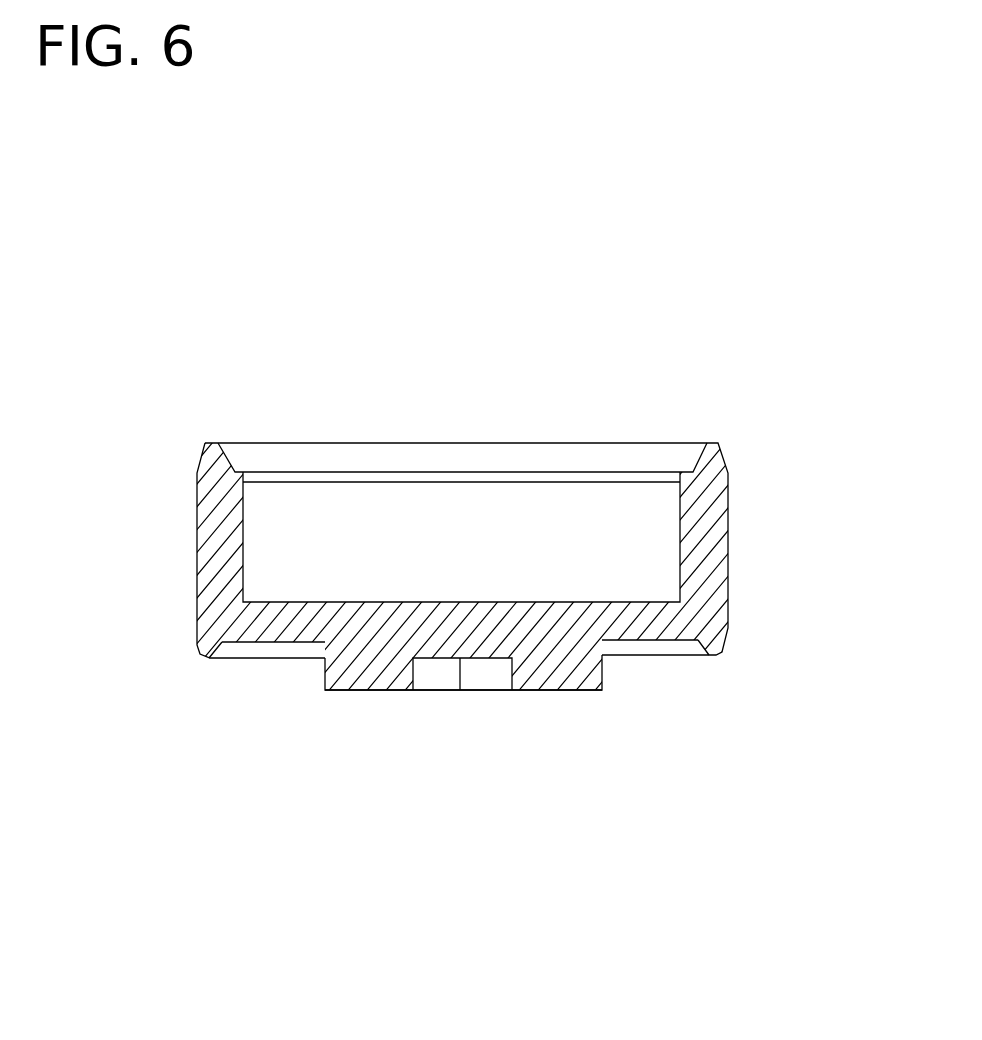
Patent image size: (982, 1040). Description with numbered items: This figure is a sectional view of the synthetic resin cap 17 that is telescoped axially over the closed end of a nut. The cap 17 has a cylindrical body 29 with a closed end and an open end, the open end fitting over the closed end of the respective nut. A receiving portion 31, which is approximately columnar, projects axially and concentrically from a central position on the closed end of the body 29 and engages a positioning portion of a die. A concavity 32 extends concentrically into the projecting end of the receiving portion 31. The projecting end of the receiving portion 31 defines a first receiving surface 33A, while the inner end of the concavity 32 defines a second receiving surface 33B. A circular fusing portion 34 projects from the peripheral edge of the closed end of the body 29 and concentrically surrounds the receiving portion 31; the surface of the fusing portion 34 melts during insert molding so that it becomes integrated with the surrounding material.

The cylindrical body 29 is at (703, 537).
The cap 17 is at (275, 633).
The fusing portion 34 is at (210, 658).
The receiving portion 31 is at (603, 677).
The concavity 32 is at (413, 677).
The first receiving surface 33A is at (362, 692).
The second receiving surface 33B is at (460, 690).